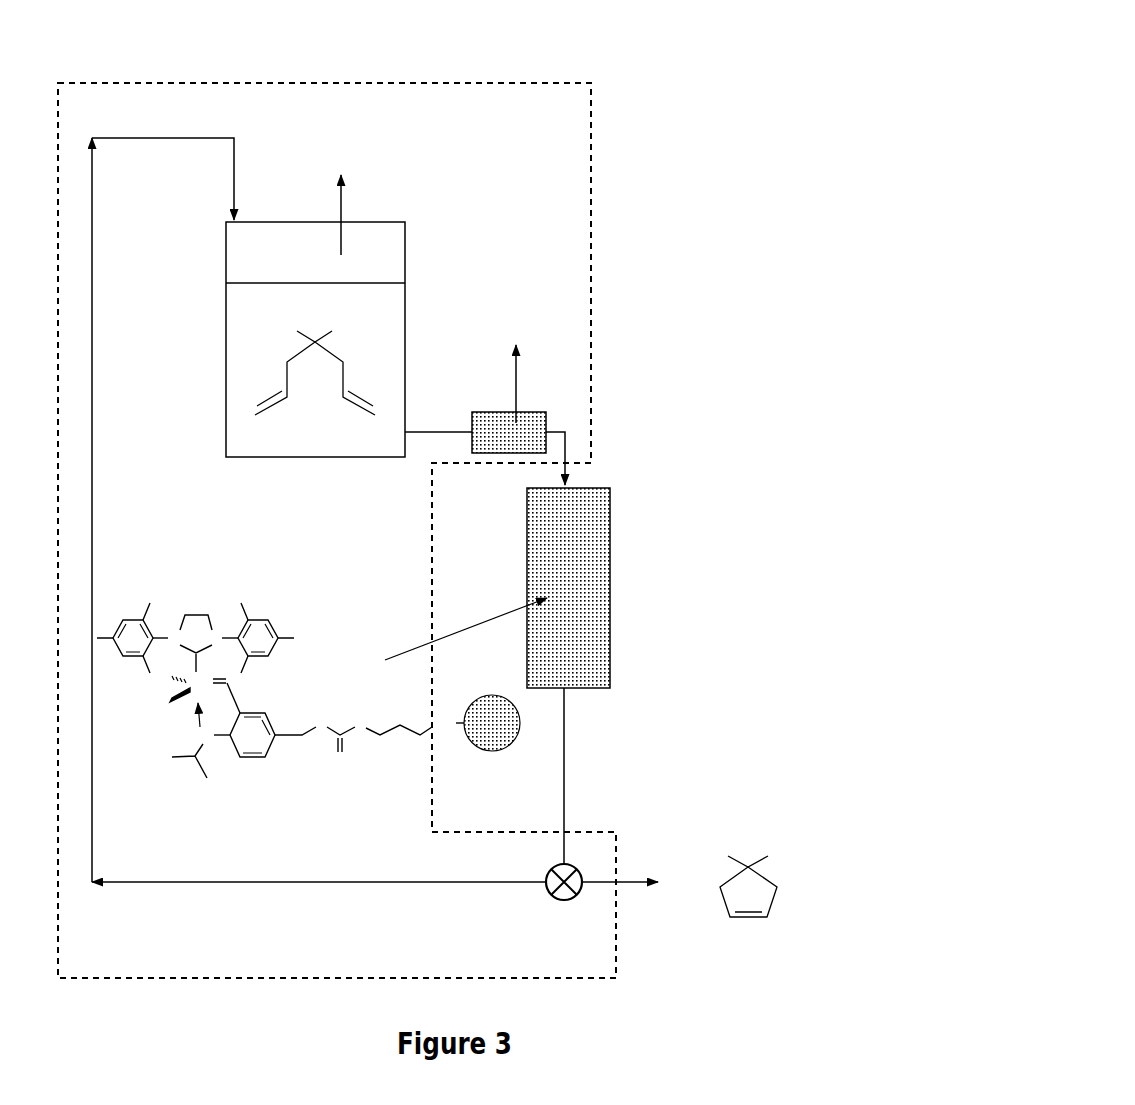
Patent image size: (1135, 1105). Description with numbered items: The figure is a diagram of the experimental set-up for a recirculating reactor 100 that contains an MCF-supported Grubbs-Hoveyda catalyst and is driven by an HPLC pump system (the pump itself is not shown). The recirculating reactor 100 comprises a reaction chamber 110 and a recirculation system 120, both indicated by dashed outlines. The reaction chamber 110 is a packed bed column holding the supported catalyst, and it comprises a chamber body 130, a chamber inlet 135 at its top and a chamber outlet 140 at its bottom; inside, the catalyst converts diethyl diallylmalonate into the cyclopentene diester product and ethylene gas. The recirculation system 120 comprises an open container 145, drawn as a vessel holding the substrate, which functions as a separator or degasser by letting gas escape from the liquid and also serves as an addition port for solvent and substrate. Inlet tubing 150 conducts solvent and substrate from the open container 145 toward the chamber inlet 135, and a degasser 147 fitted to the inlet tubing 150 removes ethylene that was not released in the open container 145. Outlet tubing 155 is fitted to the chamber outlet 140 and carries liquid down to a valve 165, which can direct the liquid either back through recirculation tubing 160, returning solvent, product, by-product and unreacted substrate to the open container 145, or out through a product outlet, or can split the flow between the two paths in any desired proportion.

The recirculating reactor 100 is at (717, 60).
The reaction chamber 110 is at (793, 555).
The recirculation system 120 is at (135, 83).
The chamber body 130 is at (610, 649).
The chamber inlet 135 is at (577, 481).
The chamber outlet 140 is at (570, 695).
The open container 145 is at (226, 258).
The degasser 147 is at (493, 412).
The inlet tubing 150 is at (434, 432).
The outlet tubing 155 is at (566, 775).
The recirculation tubing 160 is at (92, 519).
The valve 165 is at (548, 895).